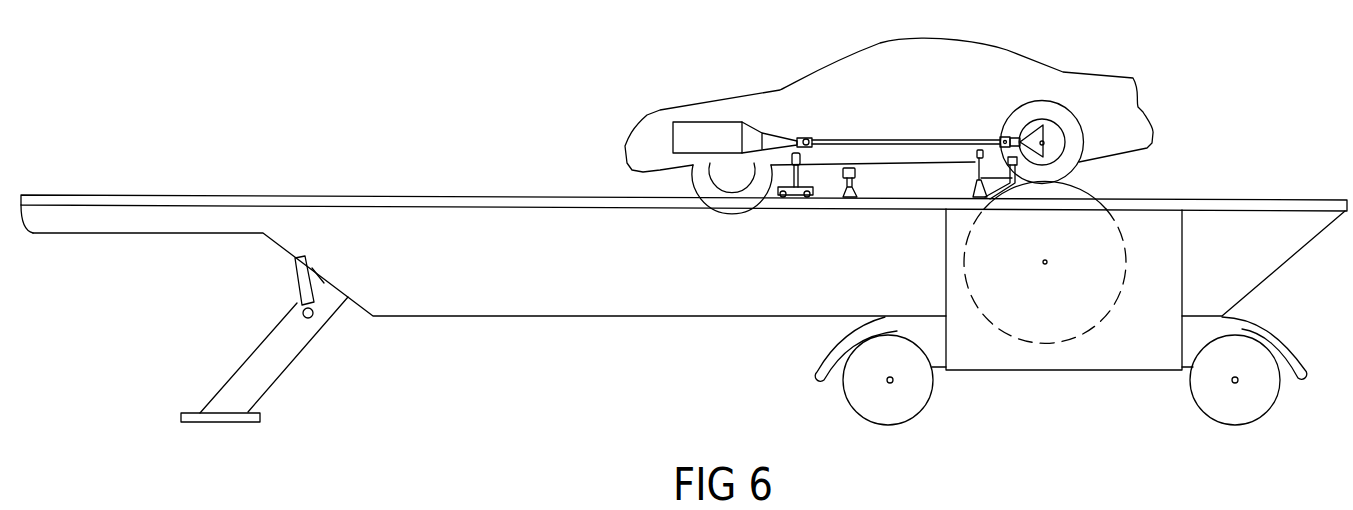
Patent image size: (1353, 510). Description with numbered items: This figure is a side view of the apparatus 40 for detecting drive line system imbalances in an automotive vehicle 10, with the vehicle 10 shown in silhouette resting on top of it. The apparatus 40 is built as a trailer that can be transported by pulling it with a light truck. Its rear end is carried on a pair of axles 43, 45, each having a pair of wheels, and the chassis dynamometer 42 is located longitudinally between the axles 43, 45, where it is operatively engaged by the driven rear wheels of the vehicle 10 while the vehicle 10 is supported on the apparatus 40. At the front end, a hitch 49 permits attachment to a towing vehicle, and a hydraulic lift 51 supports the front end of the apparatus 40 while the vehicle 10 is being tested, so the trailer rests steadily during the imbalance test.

The automotive vehicle 10 is at (883, 70).
The apparatus 40 is at (552, 297).
The chassis dynamometer 42 is at (1051, 350).
The axle 43 is at (893, 380).
The axle 45 is at (1232, 382).
The hitch 49 is at (32, 237).
The hydraulic lift 51 is at (285, 350).